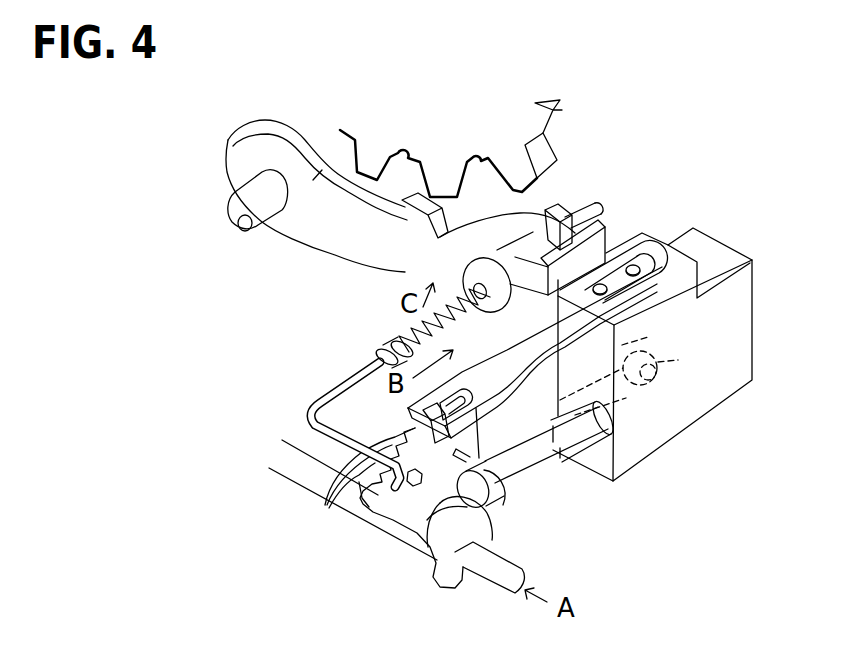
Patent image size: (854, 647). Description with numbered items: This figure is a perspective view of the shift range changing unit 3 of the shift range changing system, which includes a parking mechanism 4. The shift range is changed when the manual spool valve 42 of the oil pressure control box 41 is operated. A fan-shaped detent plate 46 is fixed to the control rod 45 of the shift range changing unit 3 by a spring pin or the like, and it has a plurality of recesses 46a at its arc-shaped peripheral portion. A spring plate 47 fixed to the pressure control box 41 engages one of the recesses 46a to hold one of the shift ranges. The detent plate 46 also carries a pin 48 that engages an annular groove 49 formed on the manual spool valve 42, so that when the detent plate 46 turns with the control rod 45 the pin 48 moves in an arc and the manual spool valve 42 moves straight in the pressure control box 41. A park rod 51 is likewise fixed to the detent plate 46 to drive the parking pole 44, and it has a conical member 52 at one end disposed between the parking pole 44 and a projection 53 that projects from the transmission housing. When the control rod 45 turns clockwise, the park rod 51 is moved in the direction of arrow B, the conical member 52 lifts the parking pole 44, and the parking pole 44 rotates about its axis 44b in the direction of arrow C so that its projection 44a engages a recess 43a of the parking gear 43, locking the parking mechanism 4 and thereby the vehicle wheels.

The shift range changing unit 3 is at (565, 518).
The parking mechanism 4 is at (322, 330).
The oil pressure control box 41 is at (742, 340).
The manual spool valve 42 is at (625, 400).
The parking gear 43 is at (343, 122).
The recess 43a is at (463, 160).
The parking pole 44 is at (290, 227).
The projection 44a is at (385, 215).
The axis 44b is at (237, 202).
The control rod 45 is at (289, 474).
The detent plate 46 is at (413, 517).
The recesses 46a is at (327, 500).
The spring plate 47 is at (487, 366).
The pin 48 is at (479, 448).
The annular groove 49 is at (497, 493).
The park rod 51 is at (358, 378).
The conical member 52 is at (517, 258).
The projection 53 is at (597, 223).